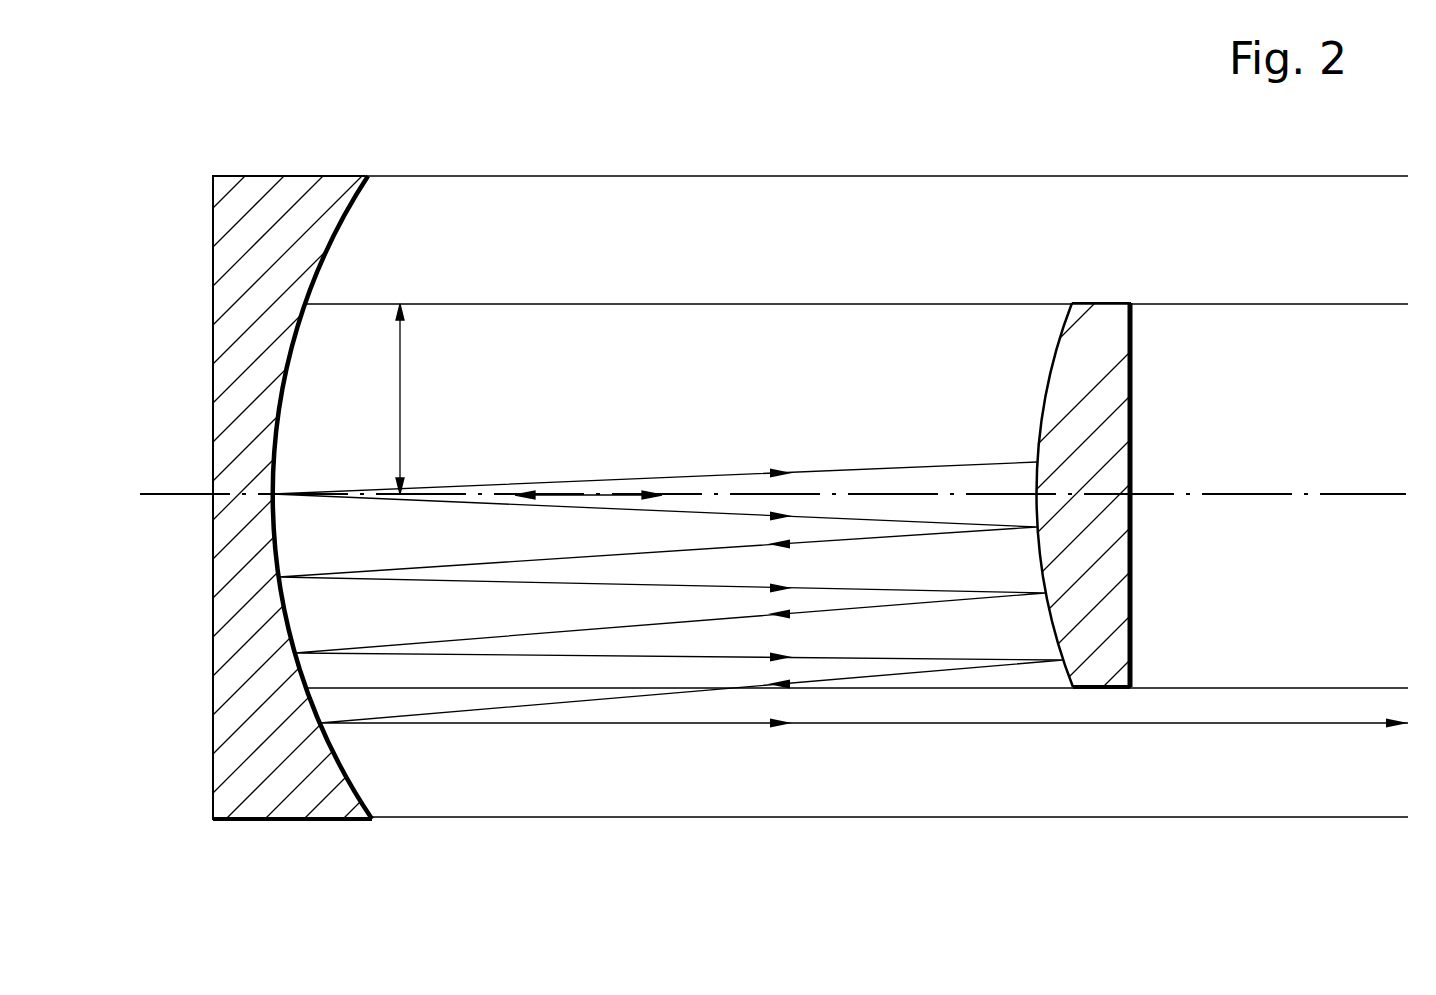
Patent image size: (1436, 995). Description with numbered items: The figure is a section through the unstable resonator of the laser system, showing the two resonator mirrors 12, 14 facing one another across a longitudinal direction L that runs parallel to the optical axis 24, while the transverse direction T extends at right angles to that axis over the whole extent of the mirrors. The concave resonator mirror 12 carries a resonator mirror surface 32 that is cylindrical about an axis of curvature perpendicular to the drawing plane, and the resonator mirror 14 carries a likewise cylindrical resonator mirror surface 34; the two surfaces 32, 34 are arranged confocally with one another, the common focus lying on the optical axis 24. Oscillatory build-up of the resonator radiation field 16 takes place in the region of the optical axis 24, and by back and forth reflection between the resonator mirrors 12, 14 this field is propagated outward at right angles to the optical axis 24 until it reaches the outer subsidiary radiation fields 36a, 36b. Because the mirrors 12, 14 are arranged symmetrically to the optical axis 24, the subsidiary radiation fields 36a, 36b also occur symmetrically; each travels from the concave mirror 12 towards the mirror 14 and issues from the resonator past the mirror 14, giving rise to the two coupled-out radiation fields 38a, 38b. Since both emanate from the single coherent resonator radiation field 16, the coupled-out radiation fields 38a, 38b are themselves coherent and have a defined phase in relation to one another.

The resonator mirror 12 is at (292, 459).
The resonator mirror 14 is at (1046, 458).
The resonator radiation field 16 is at (477, 784).
The optical axis 24 is at (1240, 493).
The resonator mirror surface 32 is at (283, 407).
The resonator mirror surface 34 is at (1040, 410).
The subsidiary radiation field 36a is at (718, 790).
The subsidiary radiation field 36b is at (710, 203).
The coupled-out radiation field 38a is at (1363, 793).
The coupled-out radiation field 38b is at (1377, 192).
The transverse direction T is at (403, 397).
The longitudinal direction L is at (573, 495).